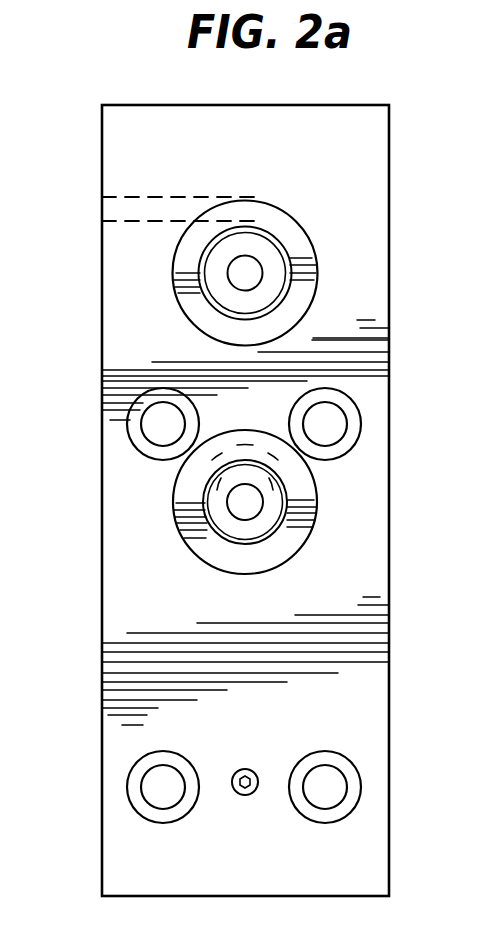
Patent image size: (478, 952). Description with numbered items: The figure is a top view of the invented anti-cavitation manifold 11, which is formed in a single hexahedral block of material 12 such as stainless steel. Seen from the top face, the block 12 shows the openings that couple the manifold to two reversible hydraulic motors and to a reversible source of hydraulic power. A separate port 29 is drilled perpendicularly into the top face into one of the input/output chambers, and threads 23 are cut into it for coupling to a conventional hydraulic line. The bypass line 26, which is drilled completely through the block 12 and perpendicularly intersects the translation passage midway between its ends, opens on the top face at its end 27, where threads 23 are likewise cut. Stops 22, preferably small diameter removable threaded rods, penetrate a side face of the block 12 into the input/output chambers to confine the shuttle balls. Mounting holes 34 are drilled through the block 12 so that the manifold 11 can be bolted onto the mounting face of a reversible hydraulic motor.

The anti-cavitation manifold 11 is at (420, 118).
The hexahedral block of material 12 is at (171, 176).
The stops 22 is at (150, 222).
The threads 23 is at (275, 255).
The bypass line 26 is at (228, 502).
The end of bypass line 27 is at (190, 497).
The separate port 29 is at (287, 297).
The mounting holes 34 is at (145, 412).